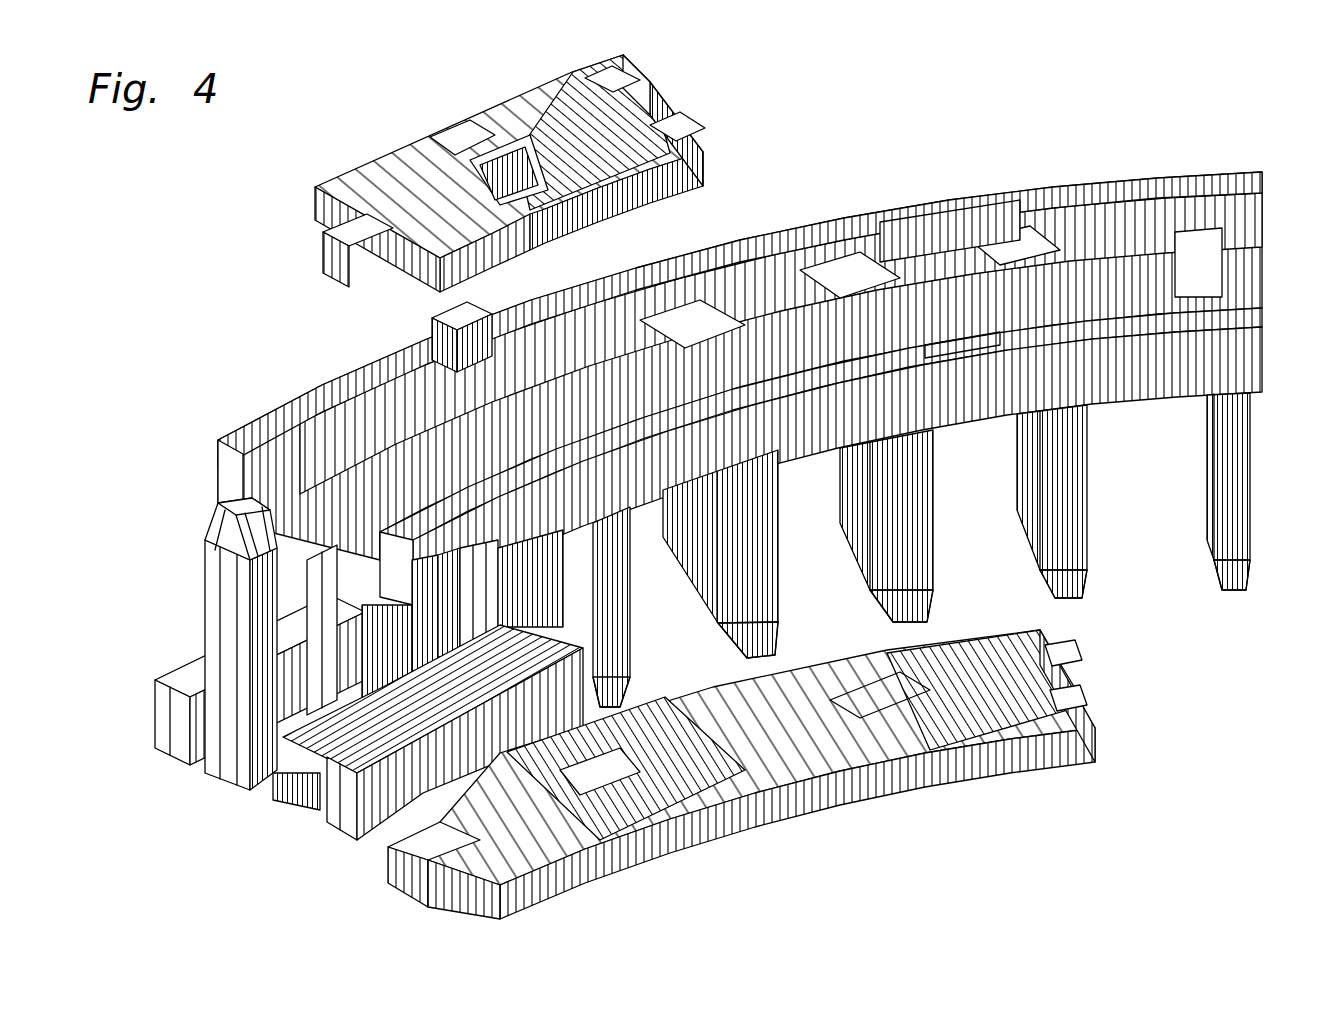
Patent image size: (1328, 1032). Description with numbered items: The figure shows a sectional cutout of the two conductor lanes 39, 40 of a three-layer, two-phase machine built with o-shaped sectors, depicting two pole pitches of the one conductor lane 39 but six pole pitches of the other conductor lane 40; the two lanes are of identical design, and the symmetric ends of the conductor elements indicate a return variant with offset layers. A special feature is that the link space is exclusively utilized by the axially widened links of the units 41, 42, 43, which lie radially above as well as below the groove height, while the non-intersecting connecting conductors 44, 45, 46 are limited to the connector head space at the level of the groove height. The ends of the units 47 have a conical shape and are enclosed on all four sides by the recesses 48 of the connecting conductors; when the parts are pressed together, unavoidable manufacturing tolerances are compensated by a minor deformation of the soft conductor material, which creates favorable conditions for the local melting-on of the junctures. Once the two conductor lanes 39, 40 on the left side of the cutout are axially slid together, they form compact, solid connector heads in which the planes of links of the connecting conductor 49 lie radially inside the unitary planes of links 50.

The conductor lane 39 is at (192, 626).
The conductor lane 40 is at (691, 491).
The unit 41 is at (948, 203).
The unit 42 is at (780, 232).
The unit 43 is at (832, 425).
The connecting conductor 44 is at (363, 187).
The connecting conductor 45 is at (507, 112).
The connecting conductor 46 is at (690, 168).
The ends of the units 47 is at (445, 330).
The recesses 48 is at (612, 82).
The connecting conductor 49 is at (855, 675).
The unitary planes of links 50 is at (950, 417).